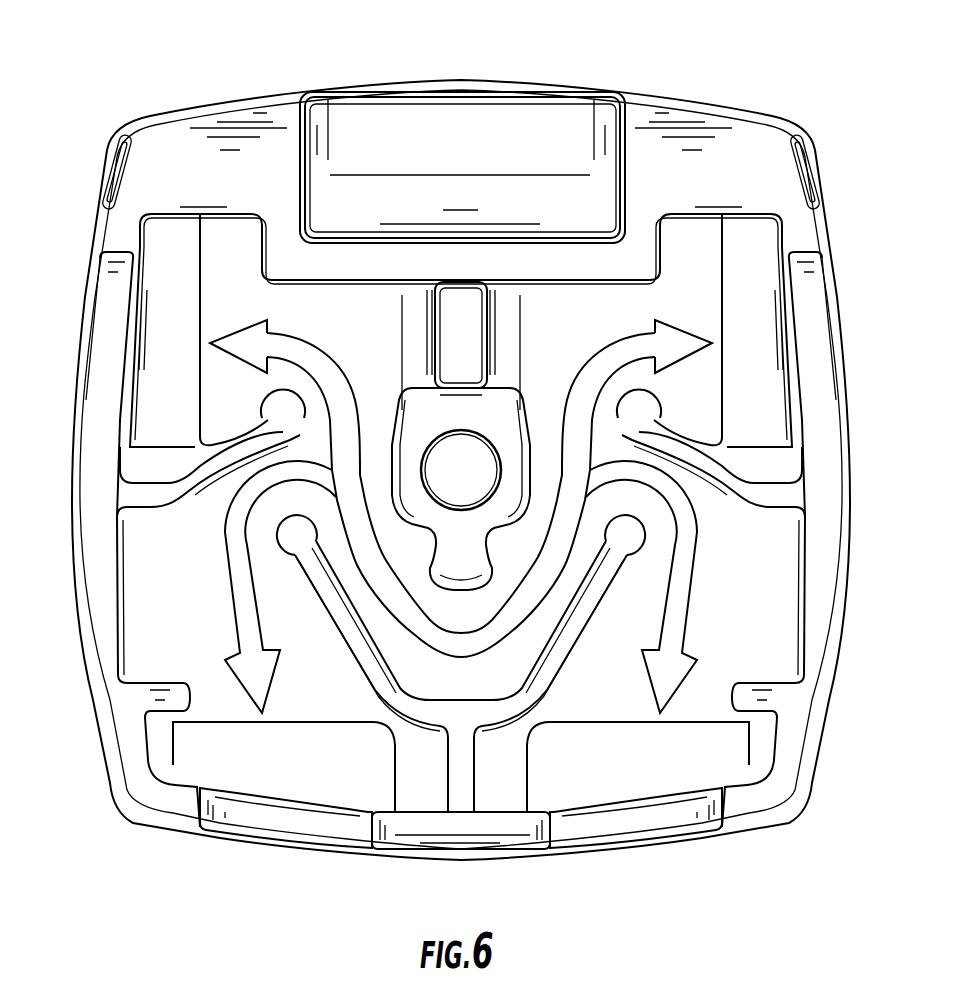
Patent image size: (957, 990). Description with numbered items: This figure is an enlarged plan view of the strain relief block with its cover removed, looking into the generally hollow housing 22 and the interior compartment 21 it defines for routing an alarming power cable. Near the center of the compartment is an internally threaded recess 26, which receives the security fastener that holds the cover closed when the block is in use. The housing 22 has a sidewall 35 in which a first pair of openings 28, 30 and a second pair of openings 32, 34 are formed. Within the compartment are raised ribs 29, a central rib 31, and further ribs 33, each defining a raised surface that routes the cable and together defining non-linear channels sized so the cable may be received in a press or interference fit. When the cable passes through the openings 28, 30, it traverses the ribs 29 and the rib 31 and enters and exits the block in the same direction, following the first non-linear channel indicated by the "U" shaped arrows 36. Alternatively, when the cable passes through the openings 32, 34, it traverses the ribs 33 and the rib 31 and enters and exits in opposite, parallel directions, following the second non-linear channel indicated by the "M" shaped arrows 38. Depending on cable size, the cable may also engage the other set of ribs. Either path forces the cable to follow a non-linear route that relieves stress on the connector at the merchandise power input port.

The interior compartment 21 is at (235, 294).
The housing 22 is at (722, 110).
The internally threaded recess 26 is at (505, 468).
The opening 28 is at (828, 342).
The ribs 29 is at (208, 447).
The opening 30 is at (103, 332).
The rib 31 is at (455, 566).
The opening 32 is at (263, 828).
The ribs 33 is at (343, 620).
The opening 34 is at (650, 830).
The sidewall 35 is at (82, 627).
The "U" shaped arrows 36 is at (575, 360).
The "M" shaped arrows 38 is at (240, 568).